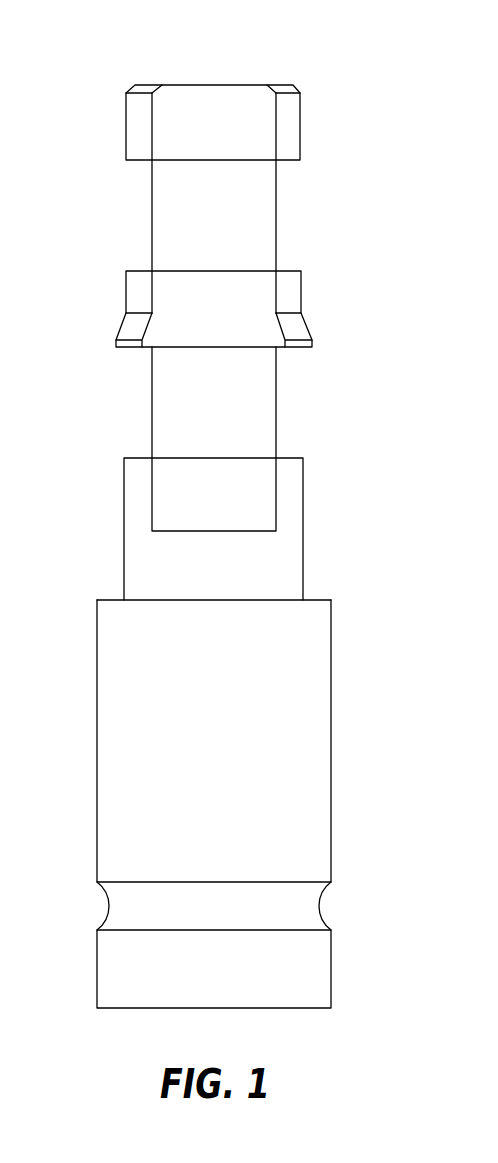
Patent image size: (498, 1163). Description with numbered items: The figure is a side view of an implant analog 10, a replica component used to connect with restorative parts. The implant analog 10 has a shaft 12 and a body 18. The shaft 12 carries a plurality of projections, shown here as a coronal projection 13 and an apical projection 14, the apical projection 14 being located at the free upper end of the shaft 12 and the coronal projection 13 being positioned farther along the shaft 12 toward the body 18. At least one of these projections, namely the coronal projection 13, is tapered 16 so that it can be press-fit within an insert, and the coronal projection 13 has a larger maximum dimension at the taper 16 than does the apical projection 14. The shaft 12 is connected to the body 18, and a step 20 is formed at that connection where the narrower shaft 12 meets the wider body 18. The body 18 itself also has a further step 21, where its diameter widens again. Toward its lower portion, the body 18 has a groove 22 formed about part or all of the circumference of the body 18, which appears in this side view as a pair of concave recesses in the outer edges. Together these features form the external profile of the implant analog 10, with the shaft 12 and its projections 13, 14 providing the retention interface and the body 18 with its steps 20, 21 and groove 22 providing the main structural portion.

The implant analog 10 is at (98, 50).
The shaft 12 is at (260, 207).
The coronal projection 13 is at (285, 293).
The apical projection 14 is at (287, 130).
The taper 16 is at (307, 322).
The body 18 is at (313, 745).
The step 20 is at (287, 457).
The step 21 is at (313, 598).
The groove 22 is at (320, 902).